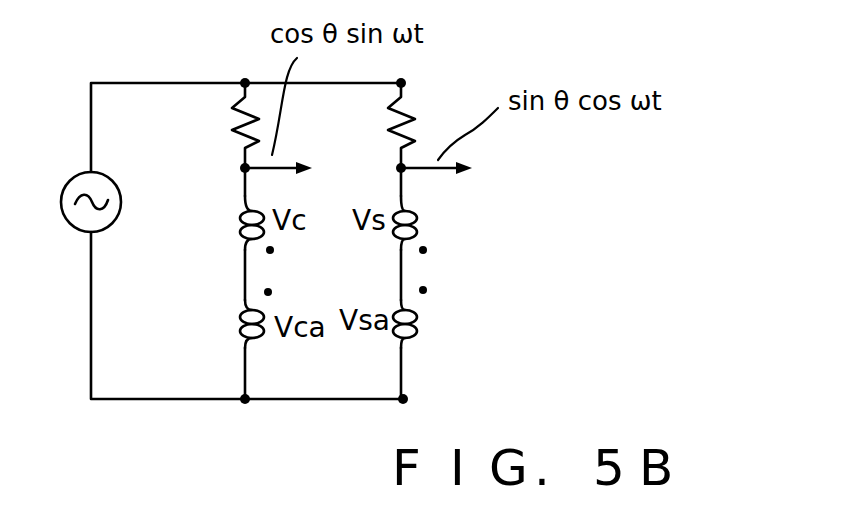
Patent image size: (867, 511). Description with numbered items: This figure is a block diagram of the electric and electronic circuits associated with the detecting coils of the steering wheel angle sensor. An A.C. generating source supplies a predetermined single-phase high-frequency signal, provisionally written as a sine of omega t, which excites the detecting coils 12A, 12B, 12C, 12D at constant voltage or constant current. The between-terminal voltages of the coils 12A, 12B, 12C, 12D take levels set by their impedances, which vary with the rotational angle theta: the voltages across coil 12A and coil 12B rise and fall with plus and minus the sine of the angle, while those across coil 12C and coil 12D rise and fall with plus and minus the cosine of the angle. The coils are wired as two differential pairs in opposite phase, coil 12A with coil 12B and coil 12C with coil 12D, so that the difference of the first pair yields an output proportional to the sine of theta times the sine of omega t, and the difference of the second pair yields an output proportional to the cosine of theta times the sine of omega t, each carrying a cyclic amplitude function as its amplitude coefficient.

The detecting coil 12A is at (423, 216).
The detecting coil 12B is at (425, 320).
The detecting coil 12C is at (237, 229).
The detecting coil 12D is at (238, 326).